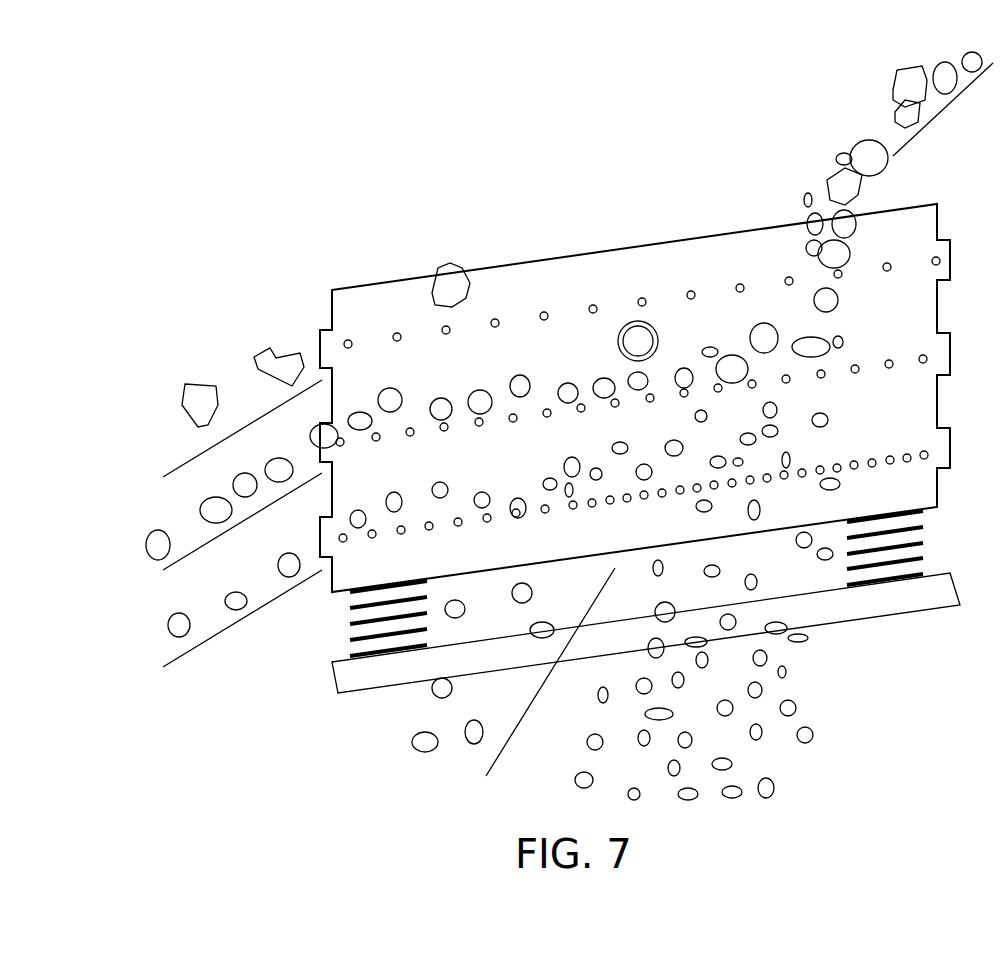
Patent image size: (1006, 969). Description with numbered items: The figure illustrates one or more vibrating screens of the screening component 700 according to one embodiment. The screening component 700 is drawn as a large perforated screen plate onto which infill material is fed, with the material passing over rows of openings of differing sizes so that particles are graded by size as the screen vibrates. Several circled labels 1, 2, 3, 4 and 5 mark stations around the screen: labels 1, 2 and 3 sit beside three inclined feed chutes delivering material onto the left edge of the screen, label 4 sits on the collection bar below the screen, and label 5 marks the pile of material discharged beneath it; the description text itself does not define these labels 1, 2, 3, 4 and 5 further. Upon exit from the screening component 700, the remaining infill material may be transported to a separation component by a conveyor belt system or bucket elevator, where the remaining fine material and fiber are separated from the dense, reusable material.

The screening component 700 is at (256, 187).
The first feed chute 1 is at (242, 411).
The second feed chute 2 is at (234, 514).
The third feed chute 3 is at (242, 610).
The collection bar / discharge 4 is at (646, 672).
The discharged material pile 5 is at (612, 725).